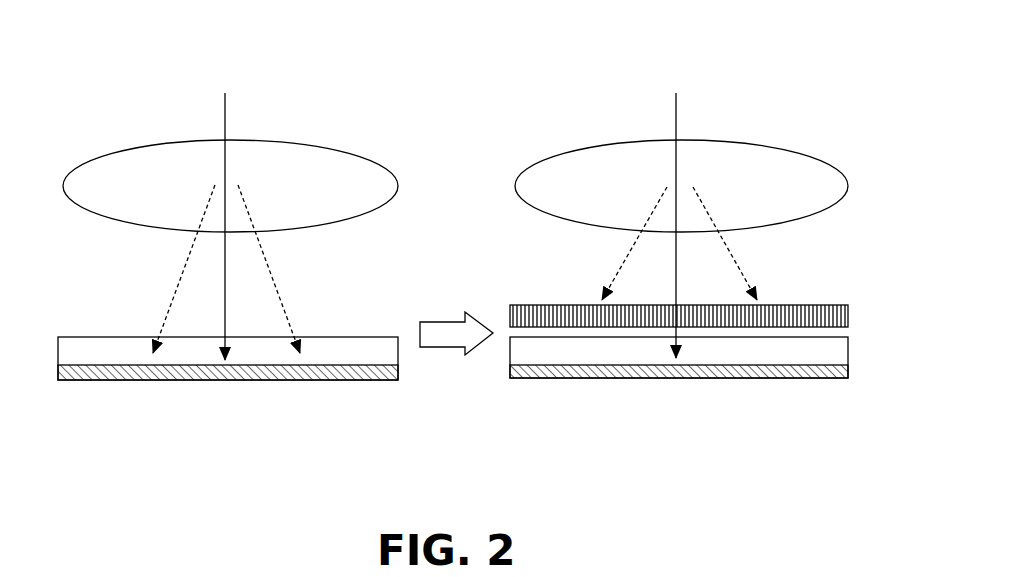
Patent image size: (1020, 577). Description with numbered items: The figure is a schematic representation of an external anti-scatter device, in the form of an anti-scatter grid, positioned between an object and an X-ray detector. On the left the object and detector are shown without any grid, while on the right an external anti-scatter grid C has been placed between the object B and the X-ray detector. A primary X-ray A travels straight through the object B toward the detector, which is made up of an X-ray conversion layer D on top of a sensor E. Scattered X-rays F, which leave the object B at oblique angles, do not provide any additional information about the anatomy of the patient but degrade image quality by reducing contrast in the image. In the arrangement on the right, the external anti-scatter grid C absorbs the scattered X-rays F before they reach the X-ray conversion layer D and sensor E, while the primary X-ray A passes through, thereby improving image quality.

The primary X-ray A is at (677, 108).
The object B is at (798, 173).
The external anti-scatter grid C is at (818, 305).
The X-ray conversion layer D is at (522, 352).
The sensor E is at (720, 373).
The scattered X-ray F is at (627, 253).